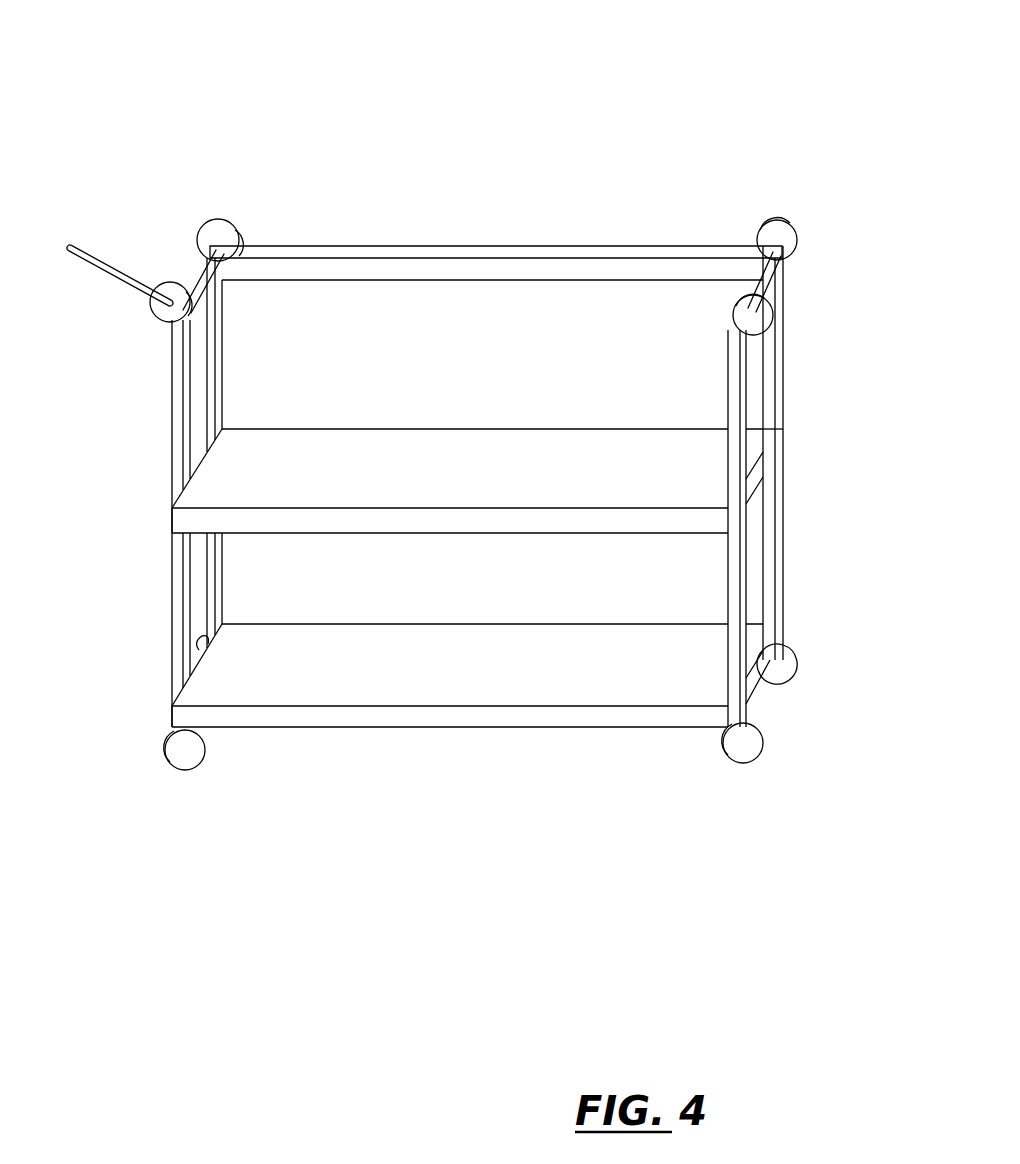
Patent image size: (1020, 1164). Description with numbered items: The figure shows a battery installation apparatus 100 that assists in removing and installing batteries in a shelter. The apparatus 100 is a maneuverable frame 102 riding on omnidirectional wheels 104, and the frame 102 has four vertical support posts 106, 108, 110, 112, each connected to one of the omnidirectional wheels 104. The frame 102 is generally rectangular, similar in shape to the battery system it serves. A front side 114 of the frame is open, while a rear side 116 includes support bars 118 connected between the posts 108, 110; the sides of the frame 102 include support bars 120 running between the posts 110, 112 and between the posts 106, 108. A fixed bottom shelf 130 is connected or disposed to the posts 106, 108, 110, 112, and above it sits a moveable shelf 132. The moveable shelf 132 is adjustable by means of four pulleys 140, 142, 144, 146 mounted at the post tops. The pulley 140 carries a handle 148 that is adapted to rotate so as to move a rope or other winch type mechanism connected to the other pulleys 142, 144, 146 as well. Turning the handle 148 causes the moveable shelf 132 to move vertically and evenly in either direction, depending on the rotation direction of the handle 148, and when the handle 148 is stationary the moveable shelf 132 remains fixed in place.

The battery installation apparatus 100 is at (562, 68).
The frame 102 is at (467, 205).
The omnidirectional wheels 104 is at (800, 645).
The vertical support post 106 is at (728, 562).
The vertical support post 108 is at (785, 518).
The vertical support post 110 is at (227, 380).
The vertical support post 112 is at (172, 588).
The front side 114 is at (333, 758).
The rear side 116 is at (712, 212).
The support bars 118 is at (600, 246).
The support bars 120 is at (196, 270).
The fixed bottom shelf 130 is at (483, 686).
The moveable shelf 132 is at (483, 488).
The pulley 140 is at (152, 312).
The pulley 142 is at (232, 223).
The pulley 144 is at (787, 230).
The pulley 146 is at (733, 308).
The handle 148 is at (83, 263).